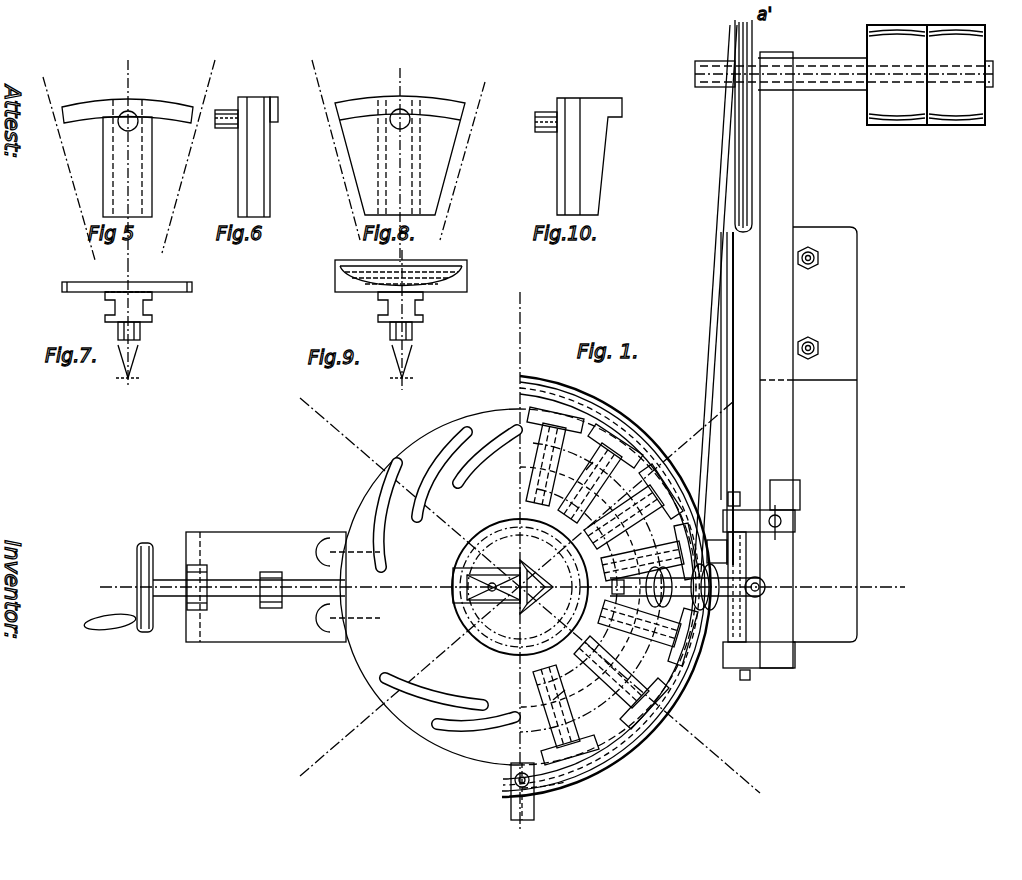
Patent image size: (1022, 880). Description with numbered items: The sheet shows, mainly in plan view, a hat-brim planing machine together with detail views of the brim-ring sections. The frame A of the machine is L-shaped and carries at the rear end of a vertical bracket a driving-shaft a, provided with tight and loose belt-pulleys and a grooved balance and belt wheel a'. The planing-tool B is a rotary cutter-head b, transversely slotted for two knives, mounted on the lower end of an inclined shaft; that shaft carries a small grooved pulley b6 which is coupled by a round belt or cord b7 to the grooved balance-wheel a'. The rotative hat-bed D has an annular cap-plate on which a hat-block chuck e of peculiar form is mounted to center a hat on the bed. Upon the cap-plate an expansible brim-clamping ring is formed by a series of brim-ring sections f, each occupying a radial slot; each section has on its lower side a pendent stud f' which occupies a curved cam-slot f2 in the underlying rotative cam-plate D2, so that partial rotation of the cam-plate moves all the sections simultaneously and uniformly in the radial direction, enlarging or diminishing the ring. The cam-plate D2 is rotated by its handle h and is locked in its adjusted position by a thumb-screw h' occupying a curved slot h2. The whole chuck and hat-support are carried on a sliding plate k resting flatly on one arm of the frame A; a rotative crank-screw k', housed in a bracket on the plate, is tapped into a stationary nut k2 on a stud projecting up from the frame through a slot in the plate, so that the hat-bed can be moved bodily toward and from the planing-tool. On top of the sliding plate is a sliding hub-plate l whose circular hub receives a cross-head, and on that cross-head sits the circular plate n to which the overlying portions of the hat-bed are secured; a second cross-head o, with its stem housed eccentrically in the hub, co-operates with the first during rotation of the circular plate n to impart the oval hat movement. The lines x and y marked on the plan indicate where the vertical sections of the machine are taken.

In FIG. 1, the driving-shaft a is at (796, 327).
In FIG. 1, the grooved balance and belt wheel a' is at (613, 581).
In FIG. 1, the cutter-head b is at (715, 298).
In FIG. 1, the small grooved pulley b6 is at (760, 598).
In FIG. 1, the round belt or cord b7 is at (738, 398).
In FIG. 1, the frame A is at (521, 360).
In FIG. 1, the planing-tool B is at (705, 580).
In FIG. 1, the rotative hat-bed D is at (606, 576).
In FIG. 1, the rotative cam-plate D2 is at (518, 587).
In FIG. 1, the hat-block chuck e is at (536, 582).
In FIG. 5, the brim-ring sections f is at (127, 158).
In FIG. 6, the brim-ring sections f is at (258, 157).
In FIG. 7, the brim-ring sections f is at (127, 289).
In FIG. 8, the brim-ring sections f is at (400, 143).
In FIG. 9, the brim-ring sections f is at (409, 288).
In FIG. 10, the brim-ring sections f is at (589, 144).
In FIG. 1, the brim-ring sections f is at (554, 701).
In FIG. 6, the pendent stud f' is at (215, 133).
In FIG. 7, the pendent stud f' is at (134, 350).
In FIG. 9, the pendent stud f' is at (409, 350).
In FIG. 10, the pendent stud f' is at (541, 113).
In FIG. 1, the curved cam-slots f2 is at (470, 472).
In FIG. 1, the handle h is at (514, 791).
In FIG. 1, the thumb-screw h' is at (510, 773).
In FIG. 1, the curved slot h2 is at (566, 774).
In FIG. 1, the sliding plate k is at (249, 601).
In FIG. 1, the rotative crank-screw k' is at (118, 588).
In FIG. 1, the stationary nut k2 is at (271, 578).
In FIG. 1, the sliding hub-plate l is at (346, 585).
In FIG. 1, the circular plate n is at (486, 575).
In FIG. 1, the second cross-head o is at (490, 581).
In FIG. 1, the set screw s is at (594, 458).
In FIG. 1, the section line x is at (502, 576).
In FIG. 1, the section line y is at (516, 550).